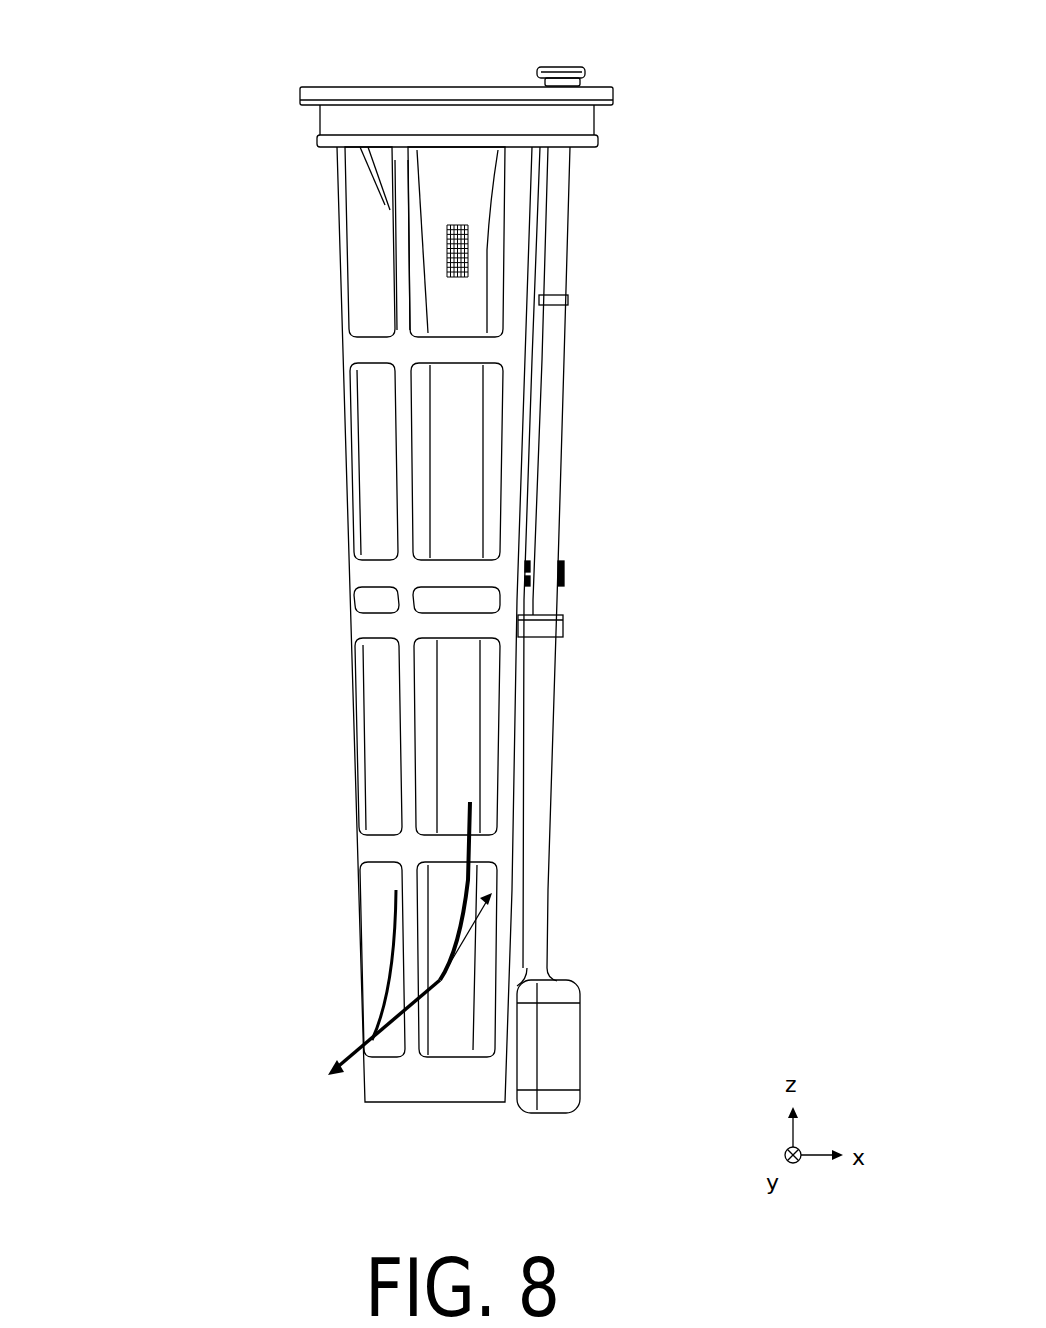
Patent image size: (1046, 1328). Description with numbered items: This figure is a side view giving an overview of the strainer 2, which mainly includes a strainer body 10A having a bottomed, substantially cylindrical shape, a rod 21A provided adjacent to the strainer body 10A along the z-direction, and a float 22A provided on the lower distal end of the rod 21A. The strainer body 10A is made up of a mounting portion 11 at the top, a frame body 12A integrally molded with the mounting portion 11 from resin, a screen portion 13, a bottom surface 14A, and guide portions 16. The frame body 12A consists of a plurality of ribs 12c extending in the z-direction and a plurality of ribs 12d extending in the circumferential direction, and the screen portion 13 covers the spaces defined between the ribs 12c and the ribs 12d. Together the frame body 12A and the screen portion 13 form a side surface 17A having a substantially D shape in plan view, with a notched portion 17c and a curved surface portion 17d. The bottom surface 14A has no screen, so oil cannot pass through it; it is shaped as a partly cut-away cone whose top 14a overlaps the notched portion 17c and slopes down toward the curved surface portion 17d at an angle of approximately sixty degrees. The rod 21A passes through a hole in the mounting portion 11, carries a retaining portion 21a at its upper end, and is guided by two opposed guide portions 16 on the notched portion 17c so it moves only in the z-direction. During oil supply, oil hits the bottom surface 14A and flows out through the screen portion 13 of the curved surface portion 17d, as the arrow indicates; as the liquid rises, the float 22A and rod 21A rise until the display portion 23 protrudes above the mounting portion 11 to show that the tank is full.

The strainer 2 is at (660, 27).
The mounting portion 11 is at (335, 113).
The retaining portion 21a is at (586, 71).
The strainer body 10A is at (164, 462).
The side surface 17A is at (142, 208).
The screen portion 13 is at (435, 238).
The frame body 12A is at (217, 267).
The rib 12c is at (400, 298).
The rib 12d is at (372, 343).
The curved surface portion 17d is at (345, 500).
The notched portion 17c is at (525, 500).
The rod 21A is at (540, 740).
The display portion 23 is at (566, 300).
The guide portion 16 is at (565, 613).
The float 22A is at (575, 1025).
The bottom surface 14A is at (458, 1040).
The top 14a is at (496, 886).